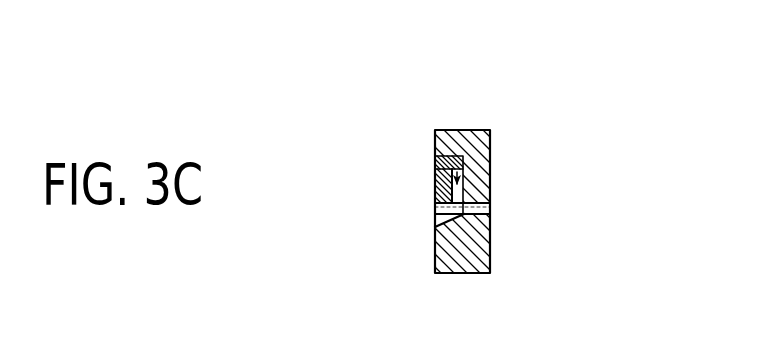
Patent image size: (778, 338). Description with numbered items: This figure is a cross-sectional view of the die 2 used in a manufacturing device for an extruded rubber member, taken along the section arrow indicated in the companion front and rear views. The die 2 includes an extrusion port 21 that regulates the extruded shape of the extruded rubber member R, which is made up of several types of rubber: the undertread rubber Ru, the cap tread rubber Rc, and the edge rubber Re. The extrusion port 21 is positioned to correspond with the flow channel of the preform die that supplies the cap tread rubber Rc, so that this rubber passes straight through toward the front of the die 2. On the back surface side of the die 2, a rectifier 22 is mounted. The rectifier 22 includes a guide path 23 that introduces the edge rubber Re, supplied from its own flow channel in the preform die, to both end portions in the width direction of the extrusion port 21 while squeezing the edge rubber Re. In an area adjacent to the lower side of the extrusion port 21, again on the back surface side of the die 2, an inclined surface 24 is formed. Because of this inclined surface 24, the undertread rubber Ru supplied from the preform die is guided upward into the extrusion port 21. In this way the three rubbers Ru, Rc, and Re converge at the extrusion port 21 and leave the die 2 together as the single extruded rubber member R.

The die 2 is at (470, 140).
The extrusion port 21 is at (478, 218).
The rectifier 22 is at (434, 189).
The guide path 23 is at (460, 192).
The inclined surface 24 is at (433, 222).
The edge rubber Re is at (450, 174).
The cap tread rubber Rc is at (432, 207).
The undertread rubber Ru is at (424, 223).
The extruded rubber member R is at (497, 209).